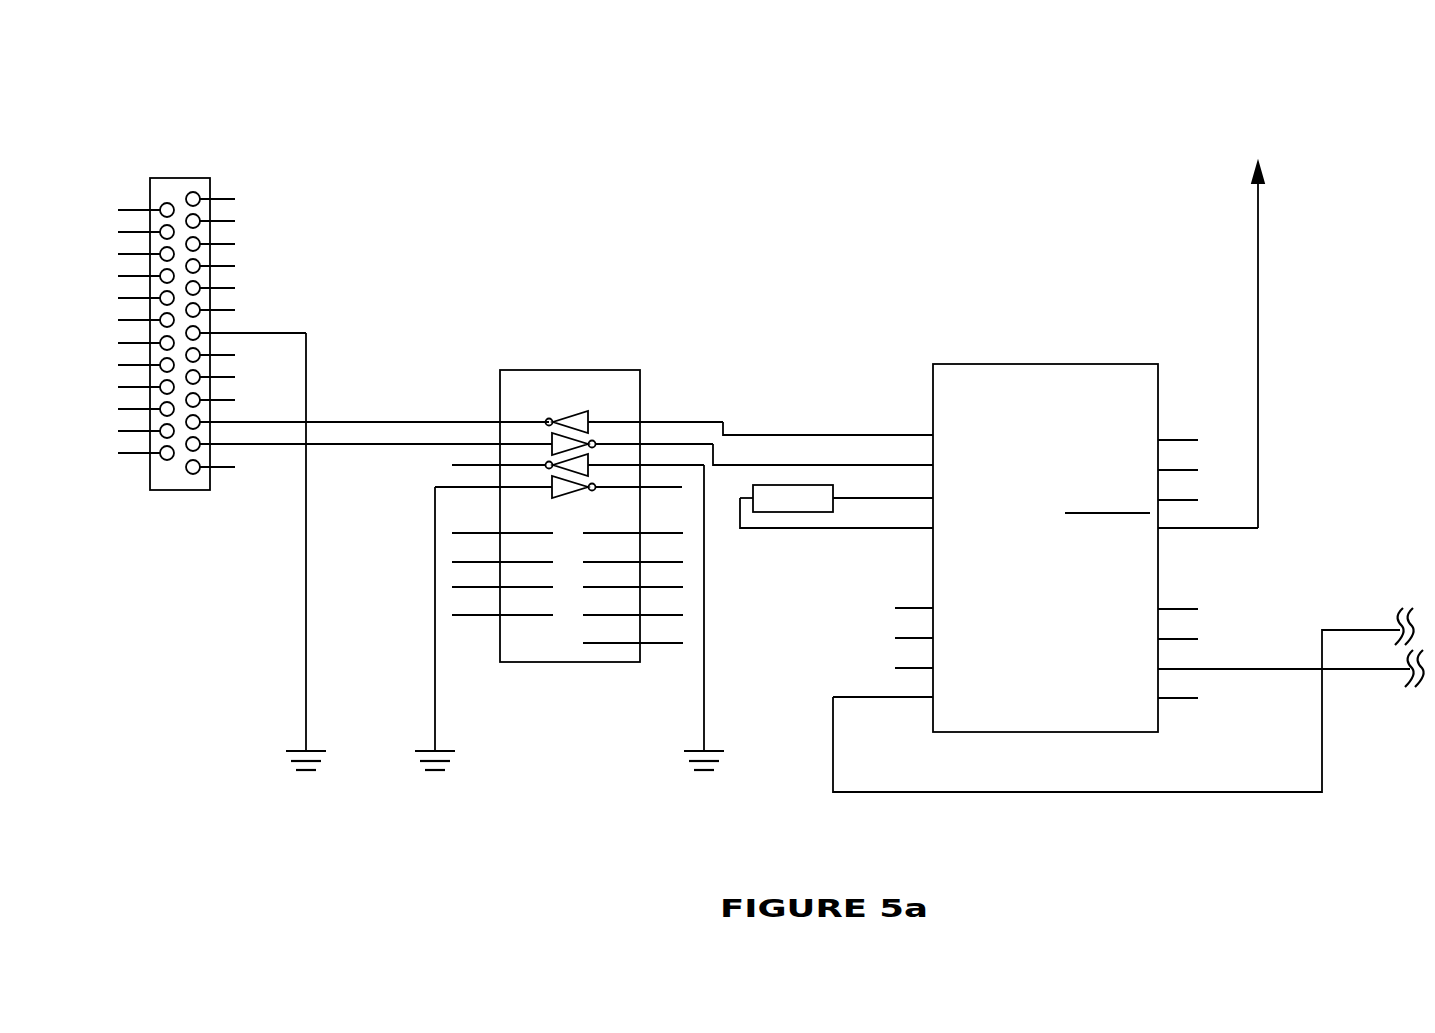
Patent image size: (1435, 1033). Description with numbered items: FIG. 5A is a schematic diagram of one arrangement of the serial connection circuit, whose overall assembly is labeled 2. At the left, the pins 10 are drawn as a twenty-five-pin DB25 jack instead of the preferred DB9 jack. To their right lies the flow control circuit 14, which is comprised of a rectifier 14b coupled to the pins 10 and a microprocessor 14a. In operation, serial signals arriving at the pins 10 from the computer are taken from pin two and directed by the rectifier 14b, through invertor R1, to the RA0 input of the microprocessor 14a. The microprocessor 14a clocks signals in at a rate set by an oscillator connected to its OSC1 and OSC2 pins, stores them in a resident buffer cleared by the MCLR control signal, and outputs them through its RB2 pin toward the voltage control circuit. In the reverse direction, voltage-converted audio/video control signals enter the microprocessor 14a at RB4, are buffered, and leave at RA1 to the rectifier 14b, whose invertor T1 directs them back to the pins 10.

The control system 2 is at (893, 62).
The pins 10 is at (180, 178).
The flow control circuit 14 is at (687, 210).
The microprocessor 14a is at (933, 364).
The rectifier 14b is at (500, 370).